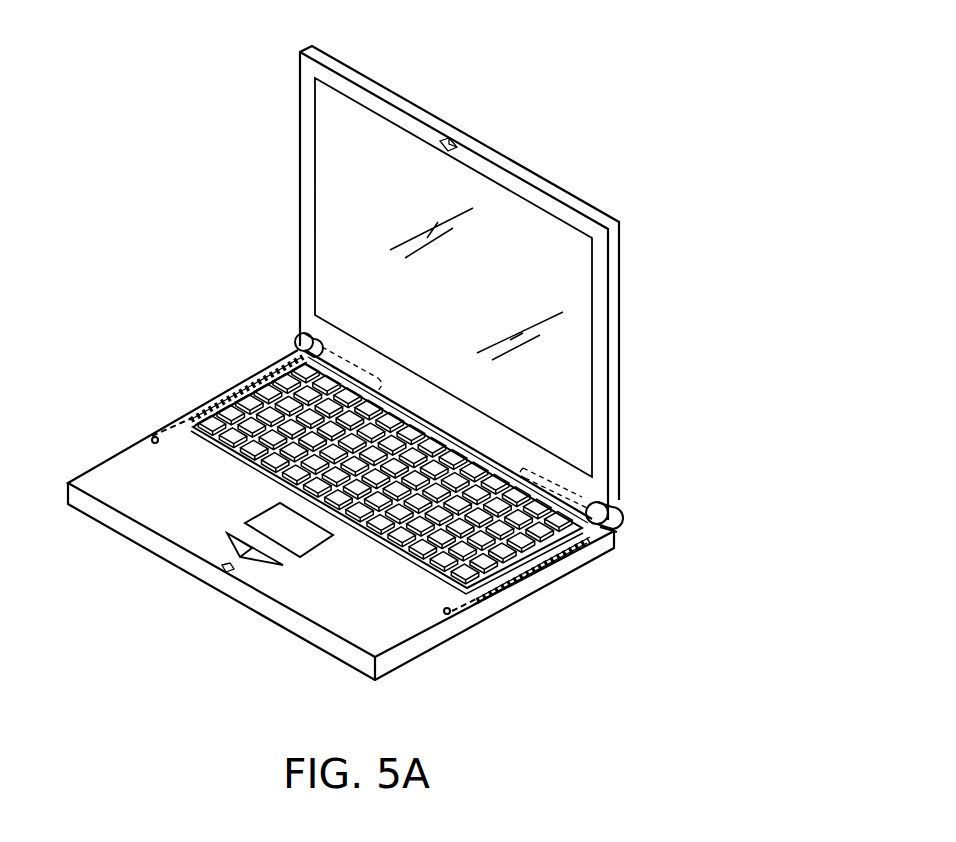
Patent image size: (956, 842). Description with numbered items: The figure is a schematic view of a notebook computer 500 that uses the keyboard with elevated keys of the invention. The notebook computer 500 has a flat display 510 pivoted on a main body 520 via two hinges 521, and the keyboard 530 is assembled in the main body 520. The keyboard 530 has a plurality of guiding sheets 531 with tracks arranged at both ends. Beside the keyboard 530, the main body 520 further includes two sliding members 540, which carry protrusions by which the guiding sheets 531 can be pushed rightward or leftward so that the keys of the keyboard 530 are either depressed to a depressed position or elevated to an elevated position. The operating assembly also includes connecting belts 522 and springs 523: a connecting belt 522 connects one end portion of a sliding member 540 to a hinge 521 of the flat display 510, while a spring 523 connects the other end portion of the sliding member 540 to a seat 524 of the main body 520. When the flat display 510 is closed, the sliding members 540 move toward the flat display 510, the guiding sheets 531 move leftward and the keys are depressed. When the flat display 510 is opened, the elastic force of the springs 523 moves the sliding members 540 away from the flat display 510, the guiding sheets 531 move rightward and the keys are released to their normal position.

The notebook computer 500 is at (99, 139).
The flat display 510 is at (562, 368).
The main body 520 is at (150, 507).
The hinge 521 is at (302, 338).
The connecting belt 522 is at (617, 530).
The spring 523 is at (162, 432).
The seat 524 is at (157, 440).
The keyboard 530 is at (255, 372).
The guiding sheet 531 is at (545, 567).
The sliding member 540 is at (173, 425).